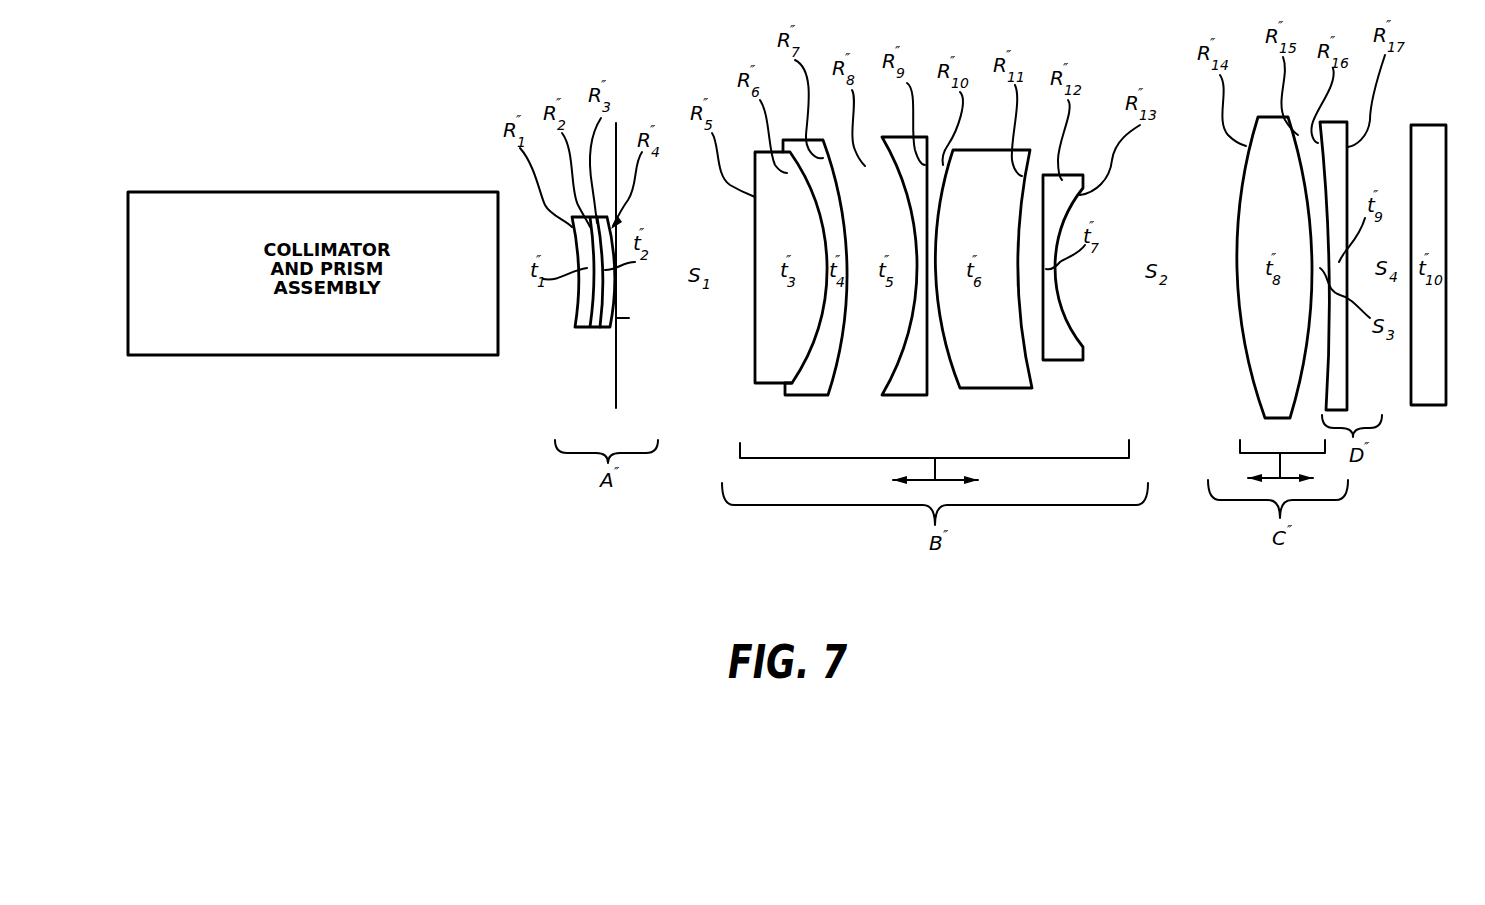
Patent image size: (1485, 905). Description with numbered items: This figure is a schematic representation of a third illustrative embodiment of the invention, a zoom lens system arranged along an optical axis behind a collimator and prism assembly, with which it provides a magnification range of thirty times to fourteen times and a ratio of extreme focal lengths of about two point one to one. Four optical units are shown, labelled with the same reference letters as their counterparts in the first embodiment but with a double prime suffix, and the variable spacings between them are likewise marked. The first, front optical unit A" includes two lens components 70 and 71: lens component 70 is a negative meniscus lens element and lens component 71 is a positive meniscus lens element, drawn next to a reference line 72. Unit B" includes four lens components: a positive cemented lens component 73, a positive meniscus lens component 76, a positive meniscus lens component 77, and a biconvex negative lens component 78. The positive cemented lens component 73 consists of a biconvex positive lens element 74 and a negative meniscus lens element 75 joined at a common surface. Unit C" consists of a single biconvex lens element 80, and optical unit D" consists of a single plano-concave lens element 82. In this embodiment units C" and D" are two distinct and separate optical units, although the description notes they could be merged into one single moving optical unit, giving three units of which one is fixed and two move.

The negative meniscus lens element 70 is at (583, 329).
The positive meniscus lens element 71 is at (597, 330).
The optical axis / reference line 72 is at (620, 363).
The positive cemented lens component 73 is at (801, 300).
The biconvex positive lens element 74 is at (792, 365).
The negative meniscus lens element 75 is at (815, 267).
The positive meniscus lens component 76 is at (910, 377).
The positive meniscus lens component 77 is at (1006, 368).
The biconvex negative lens component 78 is at (1073, 343).
The biconvex lens element 80 is at (1288, 369).
The plano-concave lens element 82 is at (1343, 380).